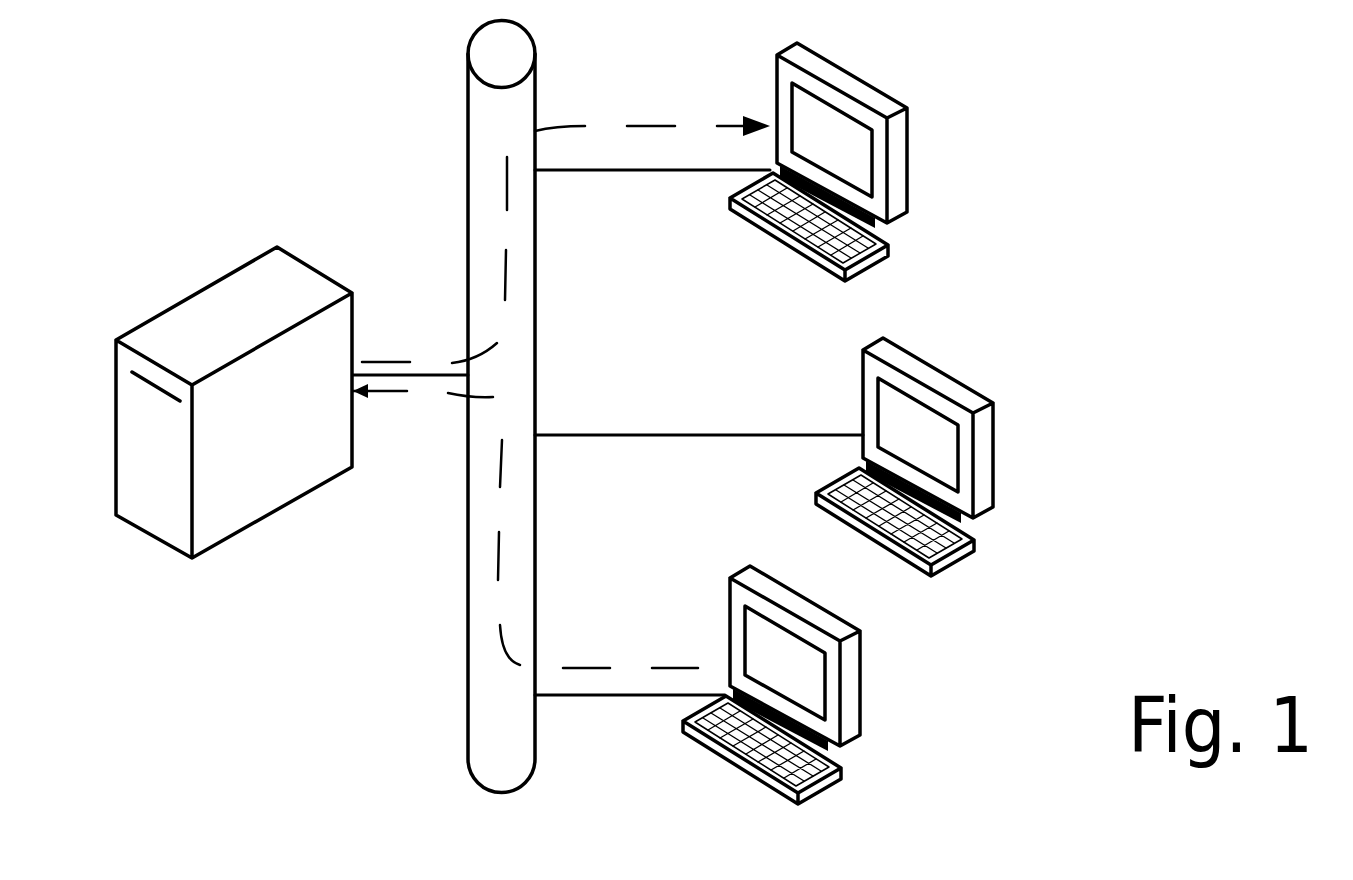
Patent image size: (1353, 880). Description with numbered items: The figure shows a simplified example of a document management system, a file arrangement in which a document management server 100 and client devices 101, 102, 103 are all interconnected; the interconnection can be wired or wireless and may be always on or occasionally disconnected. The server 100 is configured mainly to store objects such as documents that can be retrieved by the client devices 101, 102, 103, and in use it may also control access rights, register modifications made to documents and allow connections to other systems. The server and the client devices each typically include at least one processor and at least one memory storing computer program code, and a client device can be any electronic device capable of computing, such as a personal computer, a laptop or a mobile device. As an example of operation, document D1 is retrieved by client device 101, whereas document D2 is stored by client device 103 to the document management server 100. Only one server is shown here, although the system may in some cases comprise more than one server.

The document management server 100 is at (234, 402).
The client device 101 is at (878, 88).
The client device 102 is at (910, 350).
The client device 103 is at (860, 703).
The document D1 is at (425, 360).
The document D2 is at (640, 653).